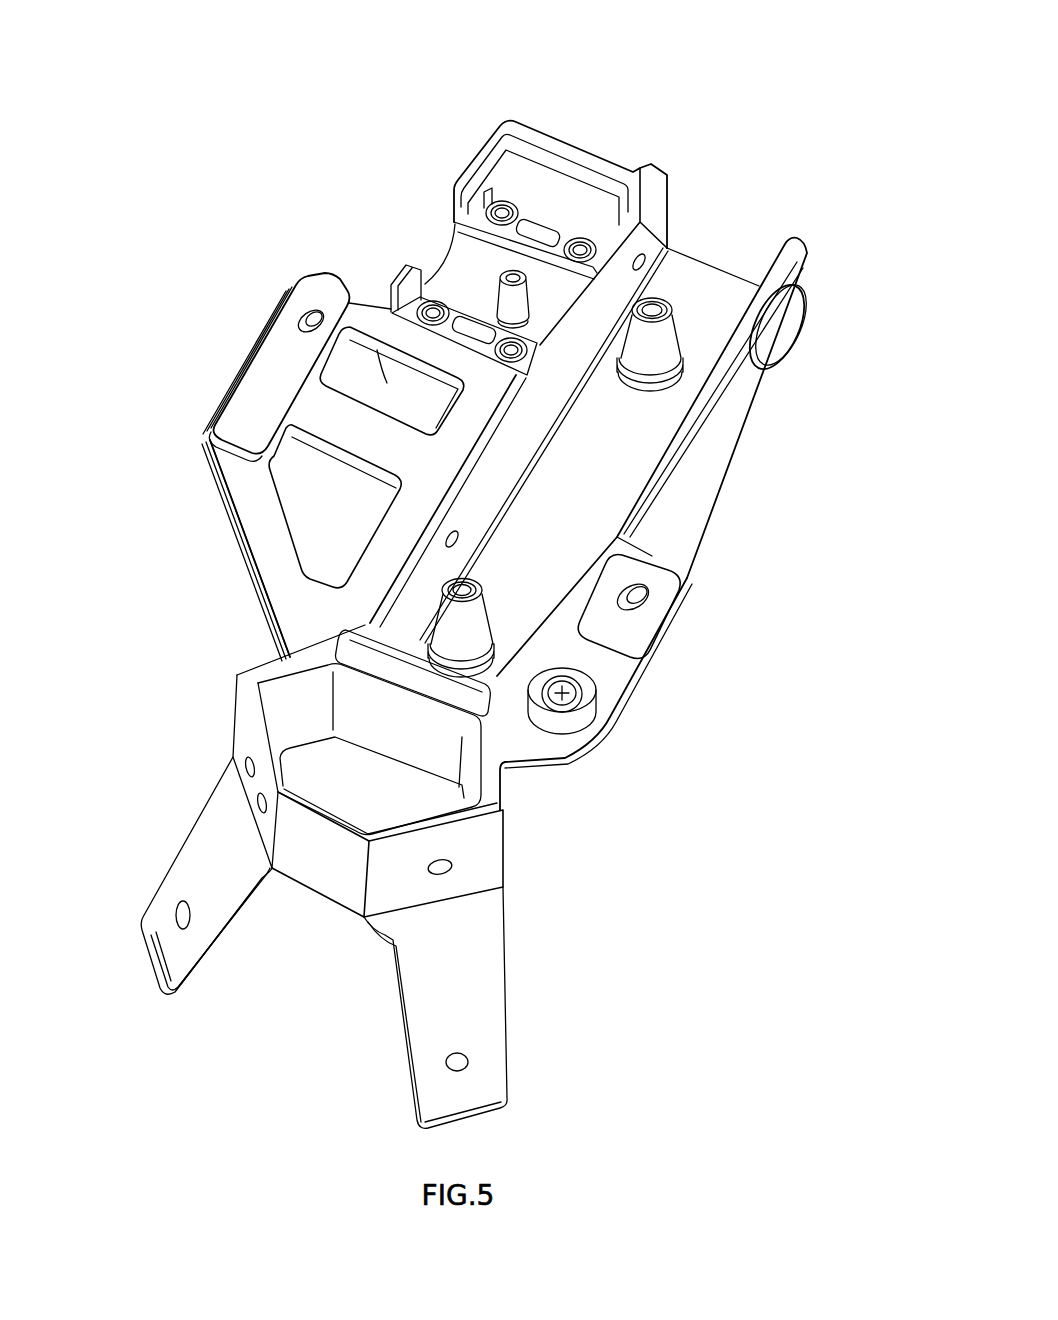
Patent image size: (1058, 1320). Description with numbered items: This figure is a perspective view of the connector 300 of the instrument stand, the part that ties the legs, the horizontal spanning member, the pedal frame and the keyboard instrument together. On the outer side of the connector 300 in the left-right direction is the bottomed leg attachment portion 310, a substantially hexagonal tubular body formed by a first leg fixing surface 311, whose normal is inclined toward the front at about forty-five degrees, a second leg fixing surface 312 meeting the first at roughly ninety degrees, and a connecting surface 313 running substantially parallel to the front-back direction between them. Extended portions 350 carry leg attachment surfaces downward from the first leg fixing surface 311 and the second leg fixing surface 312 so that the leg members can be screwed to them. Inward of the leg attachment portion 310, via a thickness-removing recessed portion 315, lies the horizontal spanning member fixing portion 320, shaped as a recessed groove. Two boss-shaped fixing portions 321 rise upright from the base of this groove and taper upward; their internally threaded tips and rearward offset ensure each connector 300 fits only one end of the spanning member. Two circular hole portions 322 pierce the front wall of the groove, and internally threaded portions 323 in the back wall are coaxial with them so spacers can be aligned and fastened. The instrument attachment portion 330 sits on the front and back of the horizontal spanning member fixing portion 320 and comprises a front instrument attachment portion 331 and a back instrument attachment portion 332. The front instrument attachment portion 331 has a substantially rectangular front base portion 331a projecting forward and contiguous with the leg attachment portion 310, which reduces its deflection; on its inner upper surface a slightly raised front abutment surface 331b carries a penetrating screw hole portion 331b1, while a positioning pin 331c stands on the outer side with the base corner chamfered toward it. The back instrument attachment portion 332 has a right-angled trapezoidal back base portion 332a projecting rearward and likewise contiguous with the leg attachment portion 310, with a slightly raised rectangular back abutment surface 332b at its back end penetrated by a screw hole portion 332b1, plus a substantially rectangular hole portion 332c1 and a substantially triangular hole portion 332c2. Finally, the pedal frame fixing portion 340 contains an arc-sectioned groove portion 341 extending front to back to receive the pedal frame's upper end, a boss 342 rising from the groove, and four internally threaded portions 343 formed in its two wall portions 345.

The connector 300 is at (710, 138).
The leg attachment portion 310 is at (302, 729).
The first leg fixing surface 311 is at (488, 869).
The second leg fixing surface 312 is at (230, 736).
The connecting surface 313 is at (315, 873).
The thickness-removing recessed portion 315 is at (458, 700).
The horizontal spanning member fixing portion 320 is at (706, 272).
The boss-shaped fixing portion 321 is at (658, 340).
The circular hole portion 322 is at (778, 333).
The internally threaded portion 323 is at (645, 265).
The instrument attachment portion 330 is at (457, 532).
The front instrument attachment portion 331 is at (657, 713).
The front base portion 331a is at (686, 606).
The front abutment surface 331b is at (655, 584).
The screw hole portion 331b1 is at (642, 604).
The positioning pin 331c is at (578, 708).
The back instrument attachment portion 332 is at (251, 309).
The back base portion 332a is at (247, 551).
The back abutment surface 332b is at (246, 417).
The screw hole portion 332b1 is at (308, 318).
The substantially rectangular hole portion 332c1 is at (355, 382).
The substantially triangular hole portion 332c2 is at (320, 512).
The pedal frame fixing portion 340 is at (418, 242).
The groove portion 341 is at (482, 249).
The boss 342 is at (514, 280).
The internally threaded portion 343 is at (580, 252).
The wall portion 345 is at (480, 205).
The extended portion 350 is at (183, 846).